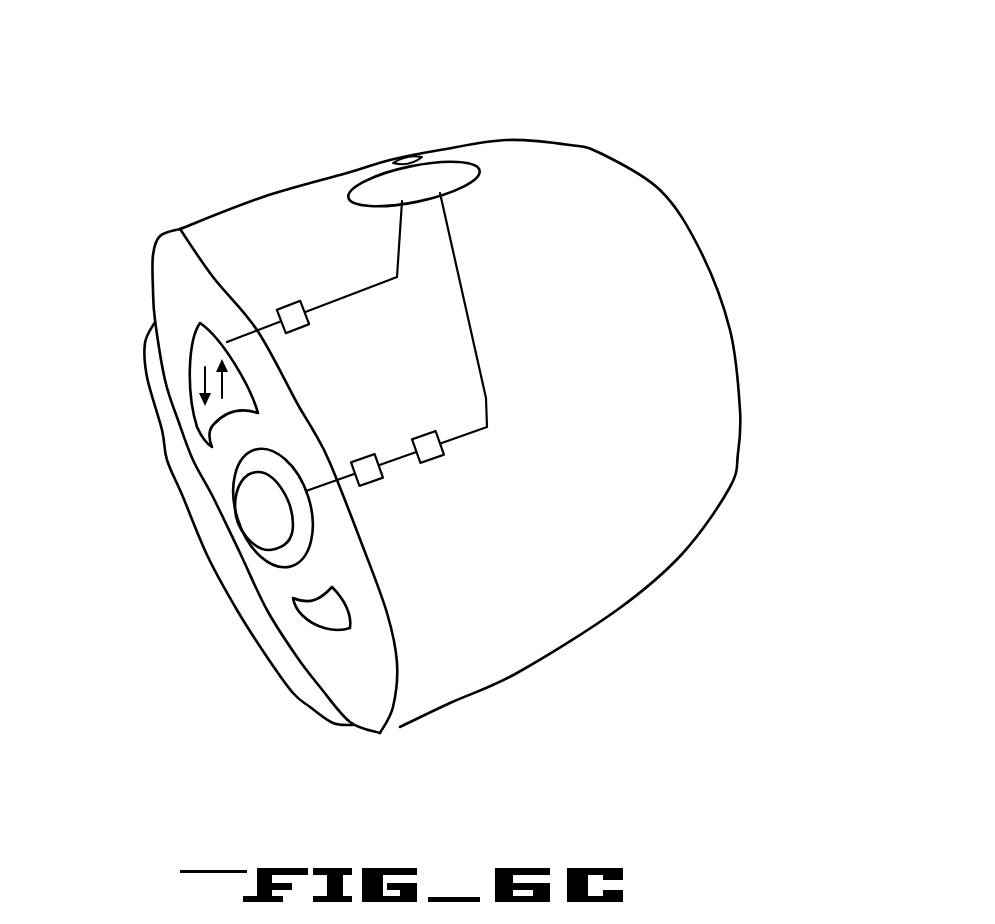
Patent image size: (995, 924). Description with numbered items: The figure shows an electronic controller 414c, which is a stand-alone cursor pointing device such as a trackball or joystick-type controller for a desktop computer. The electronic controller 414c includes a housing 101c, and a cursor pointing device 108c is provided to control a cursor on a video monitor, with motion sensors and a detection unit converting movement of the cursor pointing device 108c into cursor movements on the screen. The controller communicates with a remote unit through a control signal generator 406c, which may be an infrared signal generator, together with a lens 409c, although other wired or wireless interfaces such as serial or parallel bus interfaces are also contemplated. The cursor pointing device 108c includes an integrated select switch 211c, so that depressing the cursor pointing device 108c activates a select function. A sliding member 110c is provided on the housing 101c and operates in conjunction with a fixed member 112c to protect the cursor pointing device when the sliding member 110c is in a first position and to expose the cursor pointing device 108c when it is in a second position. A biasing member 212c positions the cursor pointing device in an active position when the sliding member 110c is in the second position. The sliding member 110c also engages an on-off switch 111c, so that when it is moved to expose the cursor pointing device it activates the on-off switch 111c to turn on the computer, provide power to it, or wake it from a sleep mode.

The electronic controller 414c is at (702, 50).
The housing 101c is at (722, 398).
The control signal generator 406c is at (473, 178).
The lens 409c is at (407, 158).
The on-off switch 111c is at (290, 312).
The sliding member 110c is at (192, 398).
The cursor pointing device 108c is at (250, 527).
The biasing member 212c is at (367, 475).
The select switch 211c is at (430, 452).
The fixed member 112c is at (318, 620).